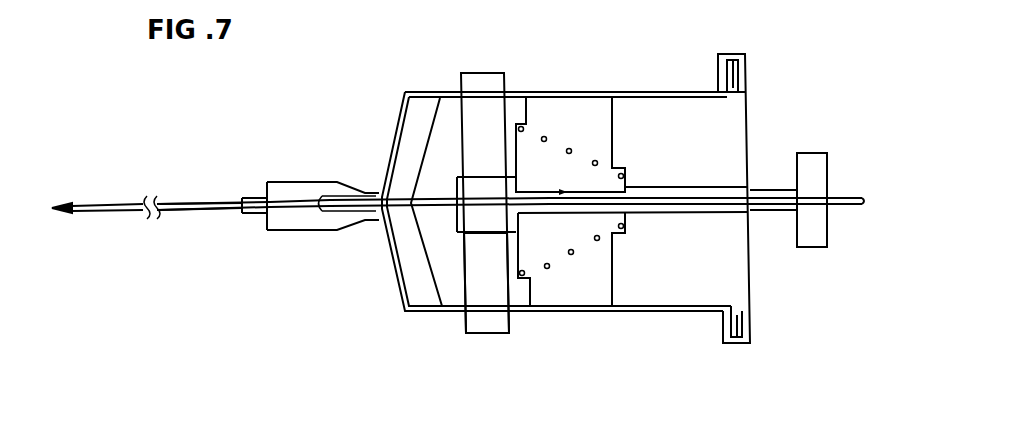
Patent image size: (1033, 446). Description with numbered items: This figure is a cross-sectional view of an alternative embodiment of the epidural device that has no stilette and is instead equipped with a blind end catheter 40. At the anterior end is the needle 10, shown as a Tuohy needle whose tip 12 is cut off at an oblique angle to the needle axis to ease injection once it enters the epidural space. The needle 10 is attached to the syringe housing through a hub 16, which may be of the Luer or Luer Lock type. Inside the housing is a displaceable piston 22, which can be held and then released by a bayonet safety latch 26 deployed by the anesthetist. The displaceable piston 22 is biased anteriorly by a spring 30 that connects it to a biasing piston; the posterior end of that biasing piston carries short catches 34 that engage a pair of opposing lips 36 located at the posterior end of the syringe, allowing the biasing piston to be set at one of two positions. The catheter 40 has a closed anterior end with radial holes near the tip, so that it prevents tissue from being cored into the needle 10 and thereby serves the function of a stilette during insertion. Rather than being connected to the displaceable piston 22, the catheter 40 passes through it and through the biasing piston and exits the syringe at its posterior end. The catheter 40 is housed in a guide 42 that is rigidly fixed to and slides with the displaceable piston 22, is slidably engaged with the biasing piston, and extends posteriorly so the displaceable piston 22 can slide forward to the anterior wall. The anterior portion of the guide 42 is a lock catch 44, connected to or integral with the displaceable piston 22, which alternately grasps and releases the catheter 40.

The needle 10 is at (92, 203).
The tip 12 is at (62, 204).
The hub 16 is at (330, 230).
The displaceable piston 22 is at (462, 288).
The bayonet safety latch 26 is at (492, 72).
The spring 30 is at (569, 151).
The short catches 34 is at (727, 53).
The opposing lips 36 is at (719, 72).
The catheter 40 is at (213, 203).
The guide 42 is at (820, 172).
The lock catch 44 is at (477, 222).